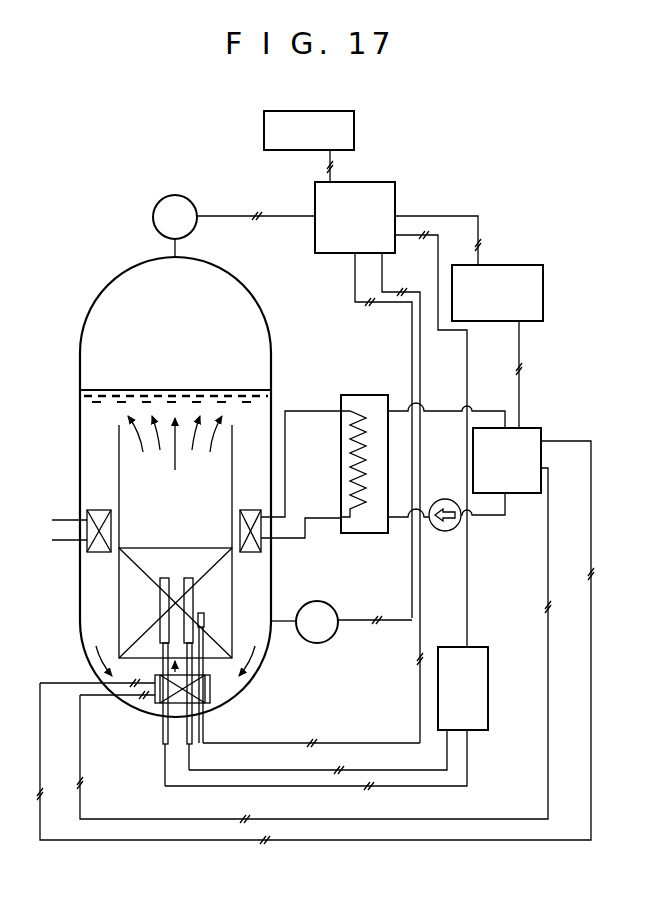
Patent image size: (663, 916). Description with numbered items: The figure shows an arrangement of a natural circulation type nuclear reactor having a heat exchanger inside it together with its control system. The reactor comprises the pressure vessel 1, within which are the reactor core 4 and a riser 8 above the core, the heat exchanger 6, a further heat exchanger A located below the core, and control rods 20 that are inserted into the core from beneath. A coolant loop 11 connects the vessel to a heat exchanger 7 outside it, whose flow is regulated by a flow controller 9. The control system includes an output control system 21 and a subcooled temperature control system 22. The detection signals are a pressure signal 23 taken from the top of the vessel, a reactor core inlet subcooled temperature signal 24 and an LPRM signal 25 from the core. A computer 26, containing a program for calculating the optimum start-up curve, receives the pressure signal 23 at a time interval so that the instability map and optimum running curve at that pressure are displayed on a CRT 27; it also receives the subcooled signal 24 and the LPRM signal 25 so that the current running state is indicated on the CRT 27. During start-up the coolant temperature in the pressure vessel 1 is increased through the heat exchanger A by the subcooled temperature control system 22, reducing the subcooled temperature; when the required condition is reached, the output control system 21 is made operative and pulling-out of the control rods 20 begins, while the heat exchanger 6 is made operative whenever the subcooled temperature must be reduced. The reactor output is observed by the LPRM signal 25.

The pressure vessel 1 is at (240, 282).
The reactor core 4 is at (118, 606).
The heat exchanger 6 is at (98, 510).
The heat exchanger 7 is at (372, 395).
The riser 8 is at (234, 432).
The flow controller 9 is at (522, 493).
The coolant pipe 11 is at (322, 517).
The control rods 20 is at (162, 607).
The output control system 21 is at (488, 688).
The subcooled temperature control system 22 is at (535, 265).
The pressure signal 23 is at (193, 201).
The reactor core inlet subcooled temperature signal 24 is at (331, 604).
The LPRM signal 25 is at (205, 622).
The computer 26 is at (385, 182).
The CRT 27 is at (354, 122).
The heat exchanger A is at (210, 690).